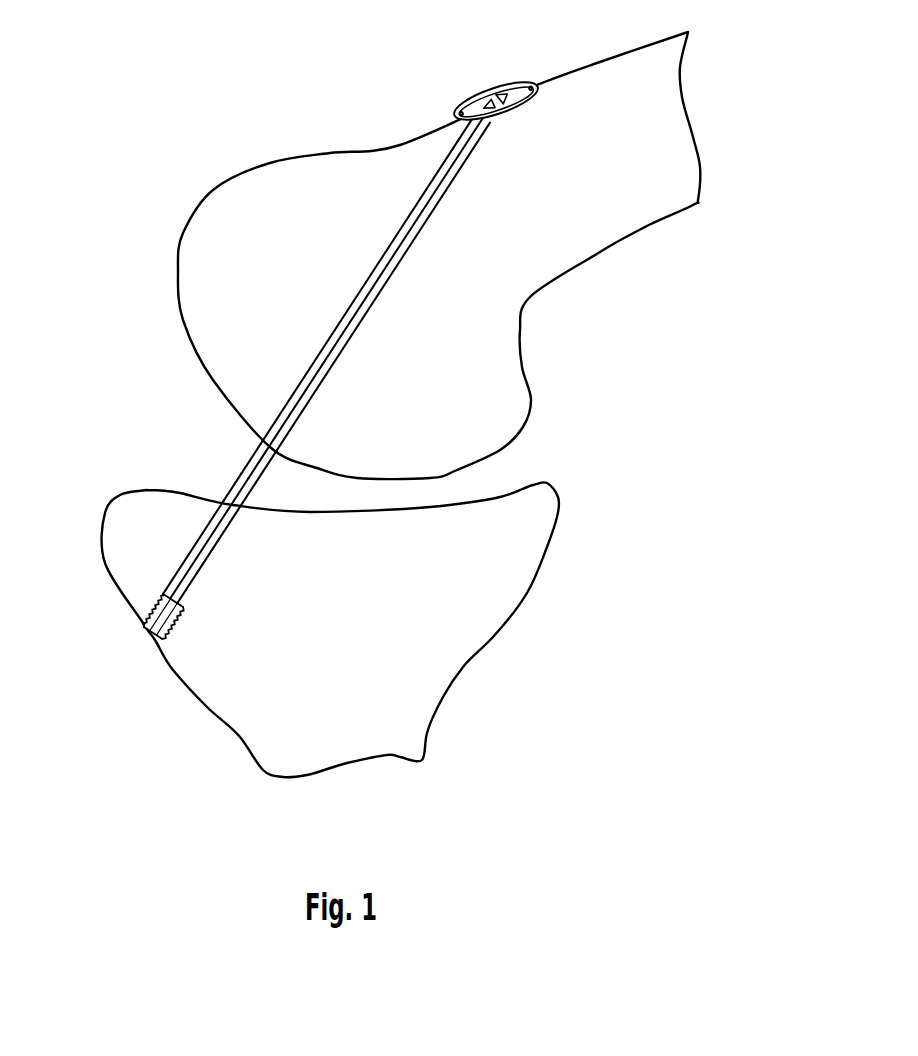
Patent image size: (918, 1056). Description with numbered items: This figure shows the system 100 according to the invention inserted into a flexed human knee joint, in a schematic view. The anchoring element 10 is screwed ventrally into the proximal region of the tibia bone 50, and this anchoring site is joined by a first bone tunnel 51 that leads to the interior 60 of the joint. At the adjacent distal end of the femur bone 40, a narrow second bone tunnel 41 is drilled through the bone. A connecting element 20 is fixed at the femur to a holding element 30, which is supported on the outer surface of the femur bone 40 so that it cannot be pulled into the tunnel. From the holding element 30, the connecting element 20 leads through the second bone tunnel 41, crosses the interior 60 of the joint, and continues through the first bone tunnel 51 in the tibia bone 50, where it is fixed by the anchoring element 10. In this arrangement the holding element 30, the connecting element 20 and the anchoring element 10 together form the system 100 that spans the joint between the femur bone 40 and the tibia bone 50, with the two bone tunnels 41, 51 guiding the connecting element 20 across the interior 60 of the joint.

The system 100 is at (441, 333).
The anchoring element 10 is at (148, 608).
The connecting element 20 is at (307, 358).
The holding element 30 is at (518, 88).
The femur bone 40 is at (510, 385).
The second bone tunnel 41 is at (338, 333).
The tibia bone 50 is at (527, 535).
The first bone tunnel 51 is at (193, 557).
The interior of the joint 60 is at (520, 465).